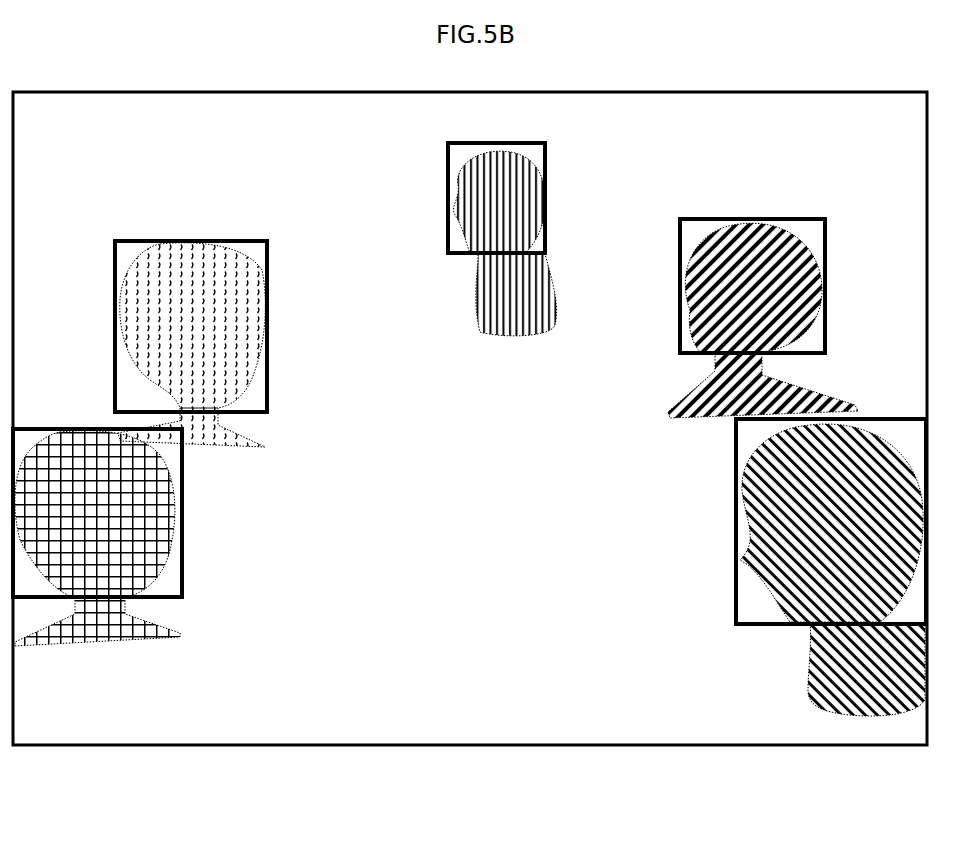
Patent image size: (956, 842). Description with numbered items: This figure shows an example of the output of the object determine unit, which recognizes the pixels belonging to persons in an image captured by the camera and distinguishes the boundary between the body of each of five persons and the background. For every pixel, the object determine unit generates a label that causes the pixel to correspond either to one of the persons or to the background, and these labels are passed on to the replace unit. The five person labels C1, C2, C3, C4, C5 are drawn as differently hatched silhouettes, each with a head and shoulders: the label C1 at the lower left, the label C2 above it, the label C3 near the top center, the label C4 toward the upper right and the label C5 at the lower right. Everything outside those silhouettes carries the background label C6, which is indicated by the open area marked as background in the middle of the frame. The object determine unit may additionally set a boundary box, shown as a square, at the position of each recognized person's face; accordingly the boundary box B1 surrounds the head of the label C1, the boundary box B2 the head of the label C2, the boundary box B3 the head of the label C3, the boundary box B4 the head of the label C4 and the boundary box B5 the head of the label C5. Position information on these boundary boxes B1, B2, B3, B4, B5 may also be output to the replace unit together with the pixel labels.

The label C1 is at (115, 628).
The label C2 is at (222, 275).
The label C3 is at (527, 162).
The label C4 is at (757, 238).
The label C5 is at (822, 645).
The label C6 is at (457, 575).
The boundary box B1 is at (182, 512).
The boundary box B2 is at (267, 368).
The boundary box B3 is at (447, 148).
The boundary box B4 is at (680, 230).
The boundary box B5 is at (735, 437).